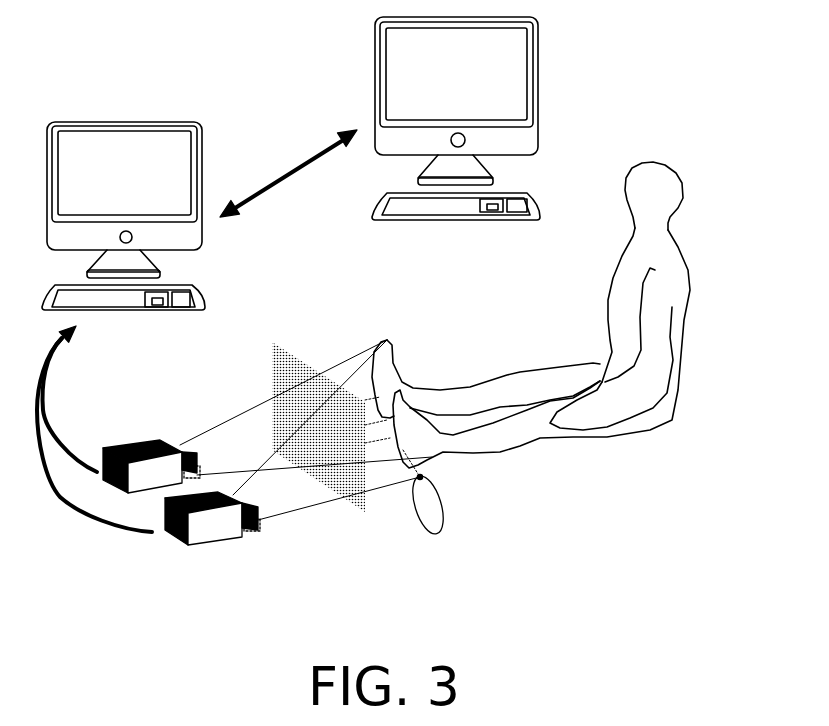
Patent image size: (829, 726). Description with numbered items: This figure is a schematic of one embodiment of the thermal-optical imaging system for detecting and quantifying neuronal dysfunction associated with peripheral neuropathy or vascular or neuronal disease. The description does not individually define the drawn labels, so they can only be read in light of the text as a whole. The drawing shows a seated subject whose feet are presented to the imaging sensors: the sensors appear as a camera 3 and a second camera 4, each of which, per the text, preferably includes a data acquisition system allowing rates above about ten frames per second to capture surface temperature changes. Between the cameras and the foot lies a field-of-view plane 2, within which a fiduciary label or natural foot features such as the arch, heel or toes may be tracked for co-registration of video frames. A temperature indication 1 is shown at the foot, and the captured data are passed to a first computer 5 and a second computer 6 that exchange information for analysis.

The temperature measurement / measured value indicator 1 is at (433, 533).
The measurement plane 2 is at (272, 342).
The second camera (thermal imaging camera) 3 is at (212, 518).
The first camera (image recording device) 4 is at (151, 466).
The first computer / evaluation unit 5 is at (123, 216).
The second computer / display unit 6 is at (456, 118).